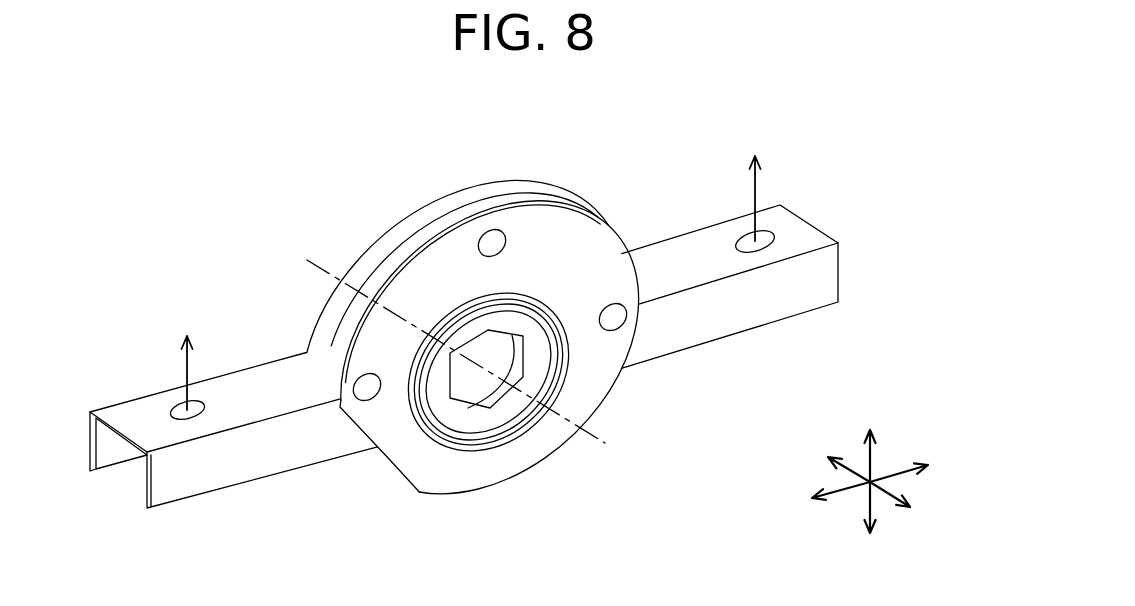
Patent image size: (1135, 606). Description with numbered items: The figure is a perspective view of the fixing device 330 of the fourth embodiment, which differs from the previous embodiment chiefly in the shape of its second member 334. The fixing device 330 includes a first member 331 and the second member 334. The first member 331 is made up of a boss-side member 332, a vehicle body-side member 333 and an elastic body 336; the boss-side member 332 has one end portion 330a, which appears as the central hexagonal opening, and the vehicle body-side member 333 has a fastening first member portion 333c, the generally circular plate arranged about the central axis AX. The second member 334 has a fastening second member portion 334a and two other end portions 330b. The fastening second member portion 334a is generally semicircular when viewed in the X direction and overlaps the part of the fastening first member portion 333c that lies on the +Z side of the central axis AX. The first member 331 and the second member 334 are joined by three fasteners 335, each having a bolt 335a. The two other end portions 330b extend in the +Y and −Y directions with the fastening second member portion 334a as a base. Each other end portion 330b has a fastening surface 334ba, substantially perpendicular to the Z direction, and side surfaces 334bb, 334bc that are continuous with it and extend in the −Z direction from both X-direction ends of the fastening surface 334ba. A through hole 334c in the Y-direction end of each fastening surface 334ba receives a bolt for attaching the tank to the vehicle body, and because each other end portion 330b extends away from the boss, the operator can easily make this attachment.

The fixing device 330 is at (798, 162).
The one end portion 330a is at (500, 410).
The other end portions 330b is at (263, 378).
The first member 331 is at (374, 483).
The boss-side member 332 is at (521, 430).
The vehicle body-side member 333 is at (539, 365).
The fastening first member portion 333c is at (530, 443).
The second member 334 is at (638, 220).
The fastening second member portion 334a is at (478, 190).
The fastening surface 334ba is at (123, 417).
The side surface 334bb is at (180, 473).
The side surface 334bc is at (100, 453).
The through hole 334c is at (202, 415).
The fastener 335 is at (516, 284).
The bolt 335a is at (367, 385).
The elastic body 336 is at (440, 428).
The central axis AX is at (622, 457).